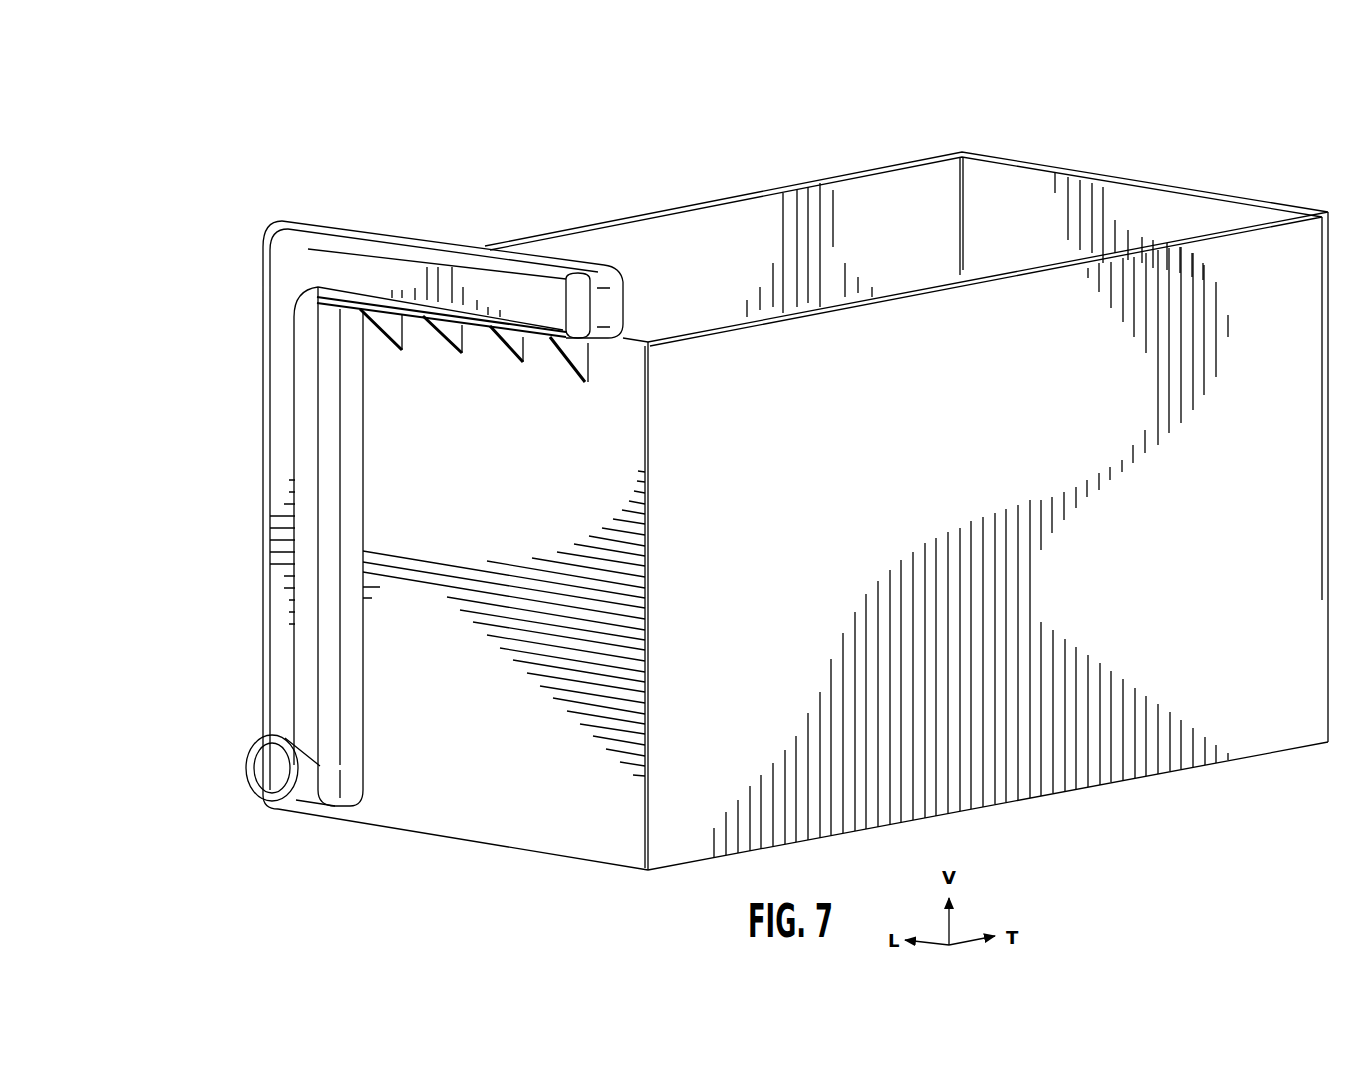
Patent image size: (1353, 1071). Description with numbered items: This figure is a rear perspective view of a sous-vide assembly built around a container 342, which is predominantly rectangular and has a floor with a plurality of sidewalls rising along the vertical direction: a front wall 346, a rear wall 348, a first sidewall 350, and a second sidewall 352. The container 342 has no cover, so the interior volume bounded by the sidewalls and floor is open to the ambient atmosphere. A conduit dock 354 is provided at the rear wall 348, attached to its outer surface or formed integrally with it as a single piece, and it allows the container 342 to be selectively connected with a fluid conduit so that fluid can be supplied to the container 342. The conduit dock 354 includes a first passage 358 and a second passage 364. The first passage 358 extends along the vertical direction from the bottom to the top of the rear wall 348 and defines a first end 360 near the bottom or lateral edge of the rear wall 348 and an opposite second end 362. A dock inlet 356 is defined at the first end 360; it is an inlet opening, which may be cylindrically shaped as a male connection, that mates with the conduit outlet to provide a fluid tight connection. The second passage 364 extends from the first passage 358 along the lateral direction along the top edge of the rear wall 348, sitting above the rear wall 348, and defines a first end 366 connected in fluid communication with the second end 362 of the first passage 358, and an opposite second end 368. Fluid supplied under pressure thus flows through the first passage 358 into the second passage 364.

The container 342 is at (950, 115).
The front wall 346 is at (1080, 192).
The rear wall 348 is at (528, 825).
The first sidewall 350 is at (1140, 750).
The second sidewall 352 is at (650, 237).
The conduit dock 354 is at (197, 447).
The dock inlet 356 is at (260, 770).
The first passage 358 is at (282, 618).
The first end 360 is at (367, 795).
The second end 362 is at (227, 278).
The second passage 364 is at (428, 262).
The first end 366 is at (328, 185).
The second end 368 is at (640, 320).